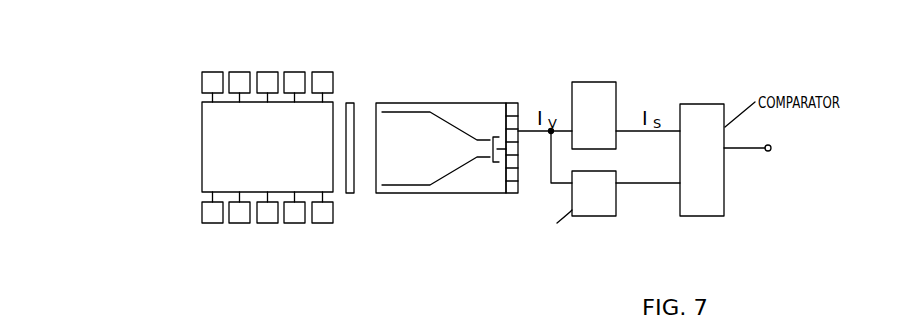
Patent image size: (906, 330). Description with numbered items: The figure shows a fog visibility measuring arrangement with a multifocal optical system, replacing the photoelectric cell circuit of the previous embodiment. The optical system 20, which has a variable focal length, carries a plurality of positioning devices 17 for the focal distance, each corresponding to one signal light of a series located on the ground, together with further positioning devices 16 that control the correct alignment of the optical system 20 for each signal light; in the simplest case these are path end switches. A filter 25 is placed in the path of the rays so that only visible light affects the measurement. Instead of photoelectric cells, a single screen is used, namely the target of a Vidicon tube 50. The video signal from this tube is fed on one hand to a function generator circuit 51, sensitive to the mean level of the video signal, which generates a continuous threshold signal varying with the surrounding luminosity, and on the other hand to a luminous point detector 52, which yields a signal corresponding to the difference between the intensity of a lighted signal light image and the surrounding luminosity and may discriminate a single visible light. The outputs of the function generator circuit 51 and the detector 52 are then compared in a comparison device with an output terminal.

The positioning devices 16 is at (212, 215).
The positioning devices 17 is at (213, 72).
The optical system 20 is at (208, 131).
The filter 25 is at (352, 104).
The Vidicon tube 50 is at (492, 105).
The function generator circuit 51 is at (603, 88).
The luminous point detector 52 is at (603, 212).